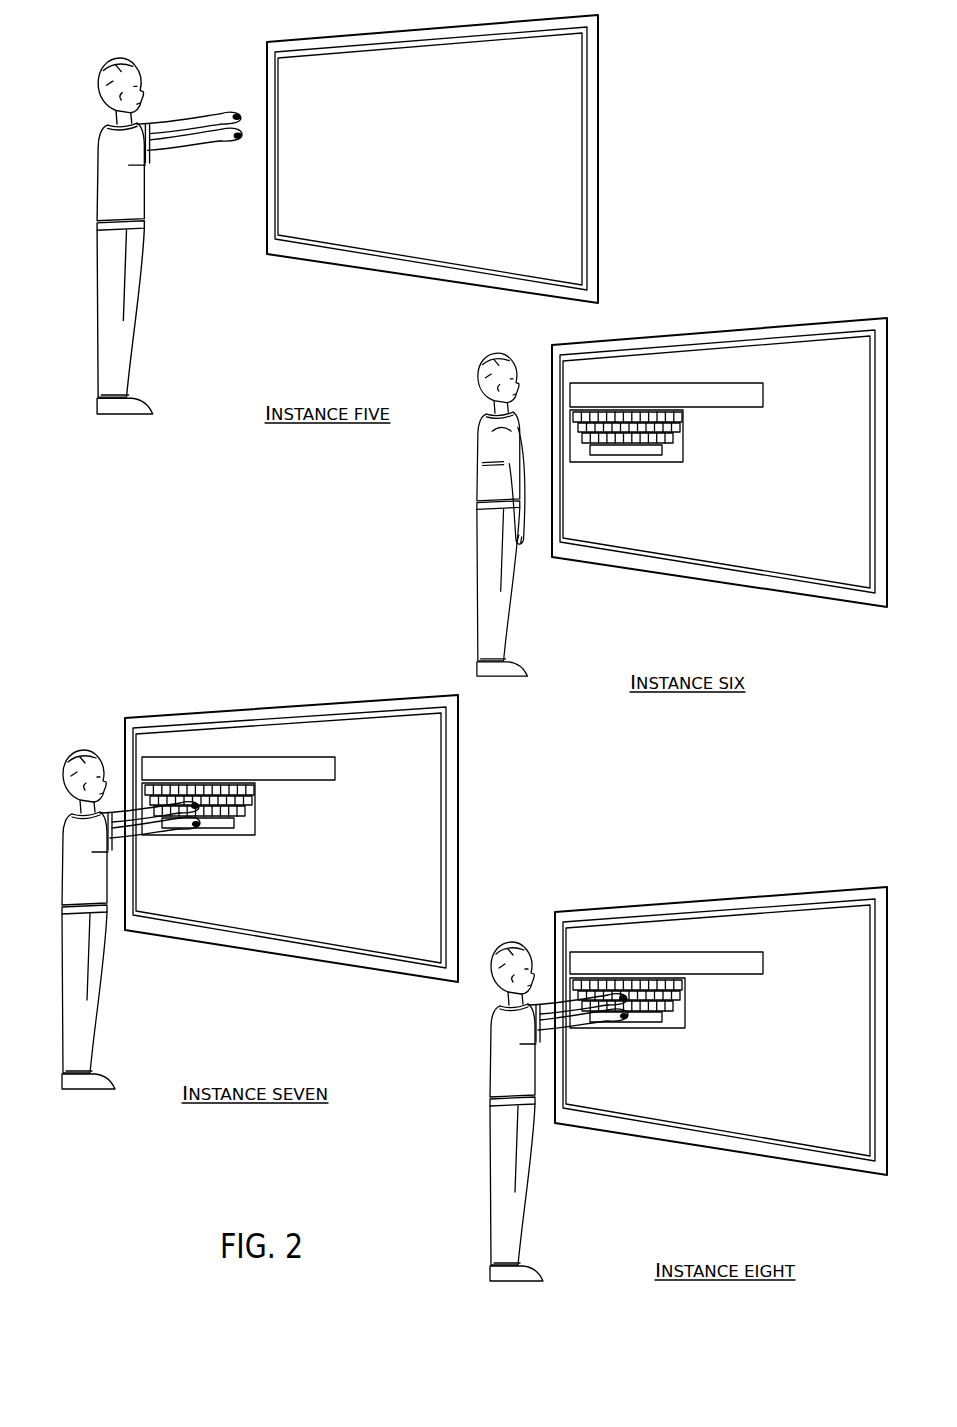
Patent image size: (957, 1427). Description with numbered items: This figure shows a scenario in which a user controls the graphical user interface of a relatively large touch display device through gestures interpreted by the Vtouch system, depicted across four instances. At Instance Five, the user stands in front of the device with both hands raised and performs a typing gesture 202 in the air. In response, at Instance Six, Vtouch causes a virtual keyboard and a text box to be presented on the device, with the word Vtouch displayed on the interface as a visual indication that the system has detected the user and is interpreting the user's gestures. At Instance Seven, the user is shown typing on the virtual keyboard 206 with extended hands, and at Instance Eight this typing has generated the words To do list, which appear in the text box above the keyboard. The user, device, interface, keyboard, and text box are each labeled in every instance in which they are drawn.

The typing gesture 202 is at (221, 166).
The typing on the virtual keyboard 206 is at (165, 852).